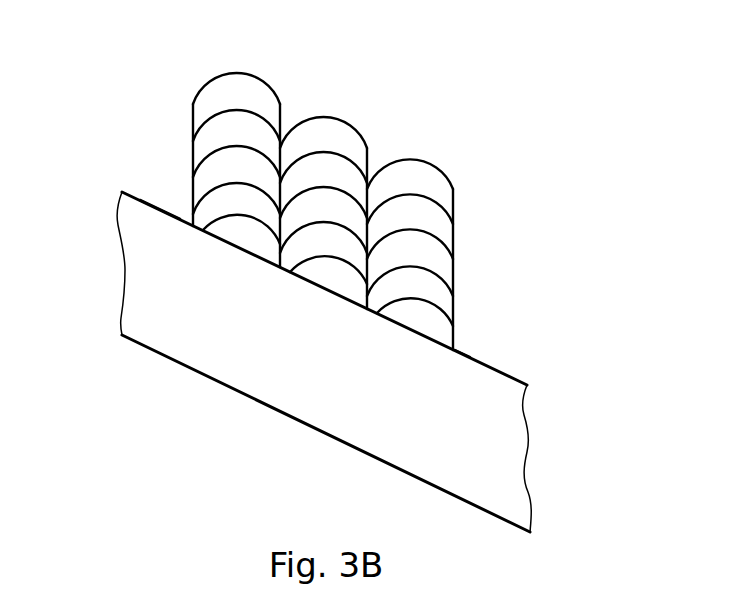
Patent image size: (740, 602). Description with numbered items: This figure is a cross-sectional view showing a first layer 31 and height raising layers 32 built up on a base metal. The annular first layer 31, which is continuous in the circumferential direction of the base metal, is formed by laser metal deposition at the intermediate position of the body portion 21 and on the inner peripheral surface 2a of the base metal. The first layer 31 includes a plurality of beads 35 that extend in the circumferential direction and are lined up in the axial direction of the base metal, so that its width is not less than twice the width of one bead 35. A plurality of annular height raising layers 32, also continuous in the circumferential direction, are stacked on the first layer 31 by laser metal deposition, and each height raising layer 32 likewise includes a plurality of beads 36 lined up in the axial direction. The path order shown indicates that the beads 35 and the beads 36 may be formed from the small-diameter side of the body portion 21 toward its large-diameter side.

The inner peripheral surface 2a is at (157, 208).
The body portion 21 is at (210, 338).
The first layer 31 is at (478, 353).
The height raising layers 32 is at (361, 196).
The beads 35 is at (262, 248).
The beads 36 is at (267, 100).